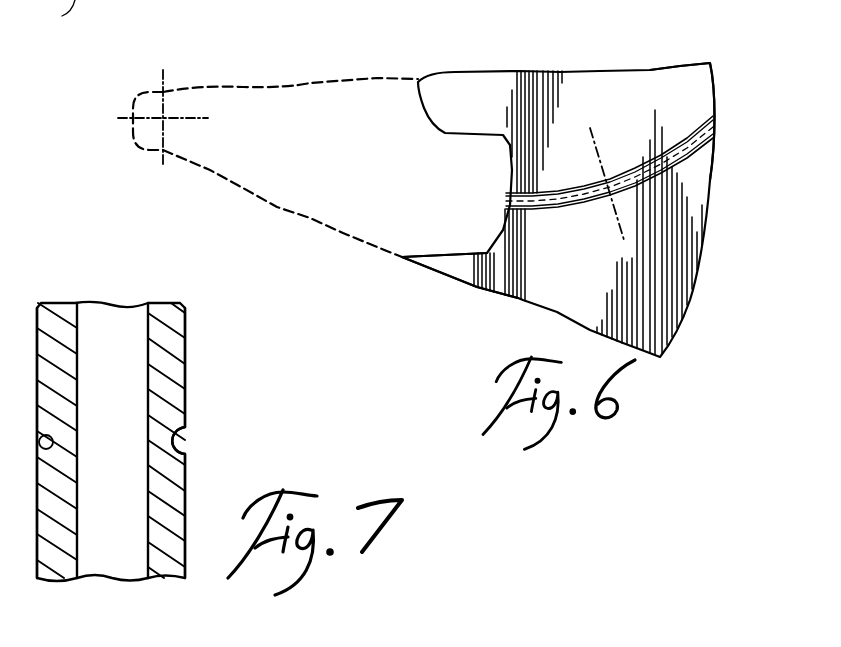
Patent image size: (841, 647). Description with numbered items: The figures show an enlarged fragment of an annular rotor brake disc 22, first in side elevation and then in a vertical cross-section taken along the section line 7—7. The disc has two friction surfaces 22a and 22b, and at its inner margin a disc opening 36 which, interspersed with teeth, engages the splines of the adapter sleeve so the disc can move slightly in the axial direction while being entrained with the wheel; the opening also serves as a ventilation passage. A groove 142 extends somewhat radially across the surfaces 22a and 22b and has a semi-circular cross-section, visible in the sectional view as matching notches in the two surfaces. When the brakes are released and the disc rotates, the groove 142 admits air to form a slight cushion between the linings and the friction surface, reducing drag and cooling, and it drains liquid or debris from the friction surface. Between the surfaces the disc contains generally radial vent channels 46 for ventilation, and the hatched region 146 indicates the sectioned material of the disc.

In FIG. 6, the annular rotor brake disc 22 is at (519, 301).
In FIG. 7, the annular rotor brake disc 22 is at (180, 320).
In FIG. 6, the surface of brake disc 22a is at (682, 100).
In FIG. 7, the surface of brake disc 22a is at (37, 330).
In FIG. 7, the surface of brake disc 22b is at (185, 388).
In FIG. 6, the disc opening 36 is at (487, 255).
In FIG. 6, the groove 142 is at (650, 170).
In FIG. 7, the groove 142 is at (175, 437).
In FIG. 6, the hatched face region 146 is at (677, 320).
In FIG. 7, the radial vent channel 46 is at (124, 523).
In FIG. 6, the section line 7— 7 is at (578, 241).